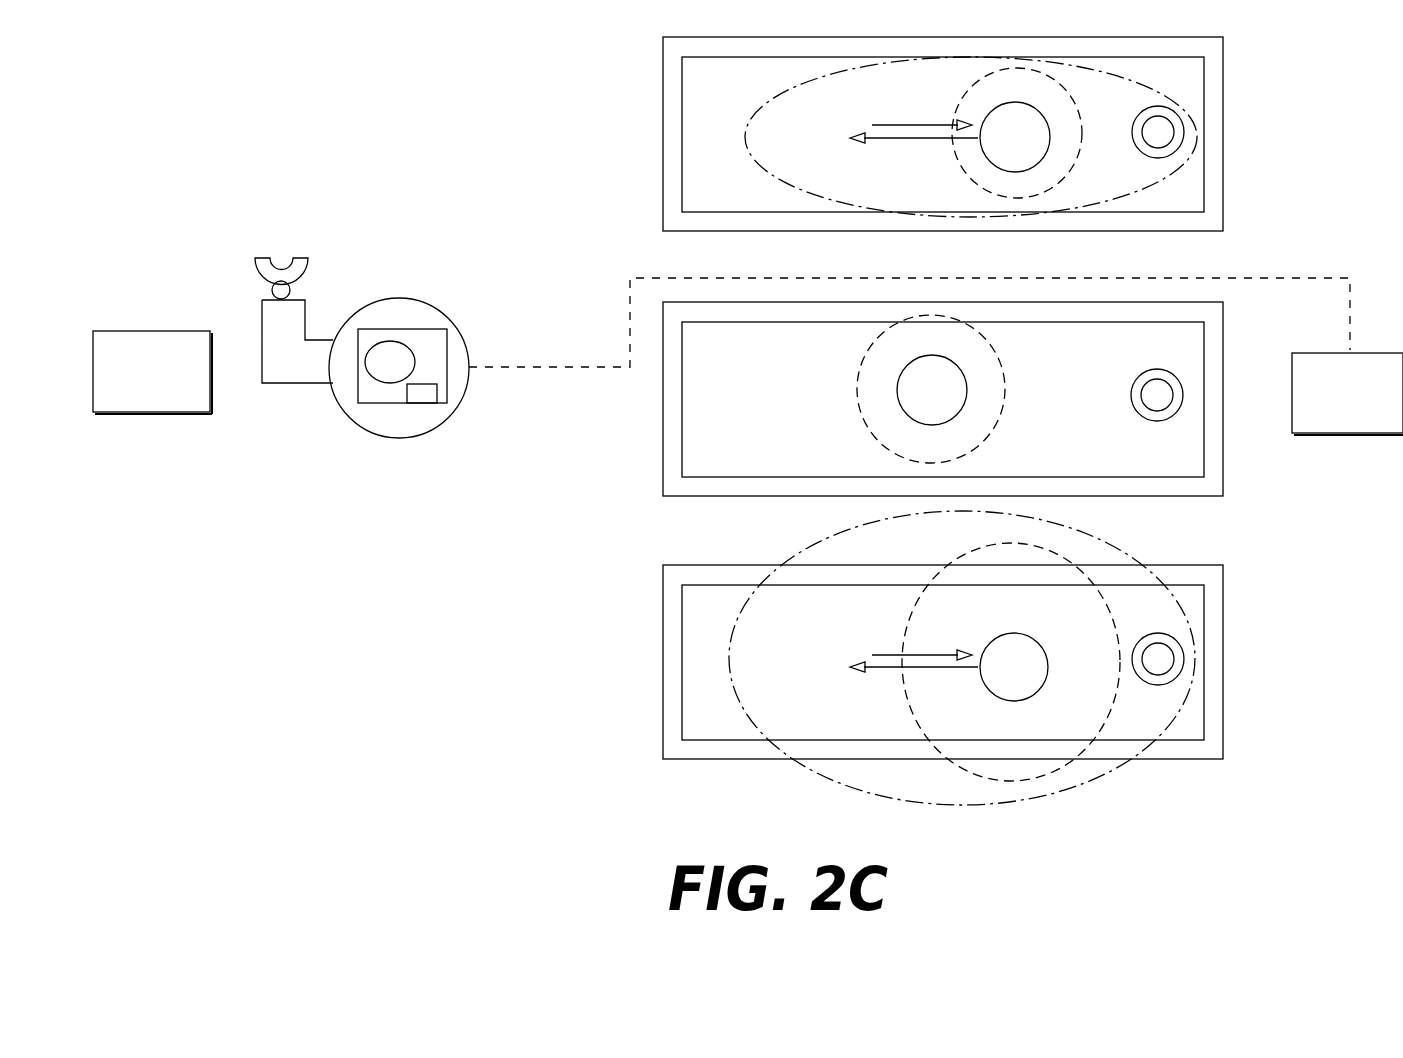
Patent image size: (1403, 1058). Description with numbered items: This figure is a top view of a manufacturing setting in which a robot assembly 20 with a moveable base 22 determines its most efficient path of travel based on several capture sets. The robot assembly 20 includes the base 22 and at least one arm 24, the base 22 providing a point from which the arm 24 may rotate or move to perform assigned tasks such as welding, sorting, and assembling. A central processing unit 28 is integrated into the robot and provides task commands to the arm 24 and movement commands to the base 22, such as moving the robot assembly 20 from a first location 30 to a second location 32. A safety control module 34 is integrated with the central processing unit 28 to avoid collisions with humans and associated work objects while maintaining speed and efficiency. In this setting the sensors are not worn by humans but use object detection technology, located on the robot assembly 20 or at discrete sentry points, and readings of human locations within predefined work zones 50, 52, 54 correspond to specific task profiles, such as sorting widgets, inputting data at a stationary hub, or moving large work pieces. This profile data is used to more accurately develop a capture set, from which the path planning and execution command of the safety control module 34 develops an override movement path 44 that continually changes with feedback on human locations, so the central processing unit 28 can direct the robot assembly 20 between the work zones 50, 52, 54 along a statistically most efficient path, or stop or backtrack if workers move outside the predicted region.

The robot assembly 20 is at (416, 290).
The base 22 is at (400, 439).
The arm 24 is at (262, 367).
The central processing unit 28 is at (400, 329).
The first location 30 is at (162, 381).
The second location 32 is at (1360, 406).
The safety control module 34 is at (437, 392).
The override movement path 44 is at (1243, 278).
The work zone 50 is at (717, 147).
The second display screen 52 is at (717, 412).
The third display screen 54 is at (717, 677).